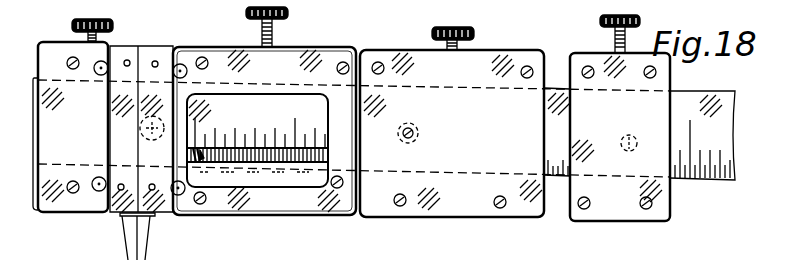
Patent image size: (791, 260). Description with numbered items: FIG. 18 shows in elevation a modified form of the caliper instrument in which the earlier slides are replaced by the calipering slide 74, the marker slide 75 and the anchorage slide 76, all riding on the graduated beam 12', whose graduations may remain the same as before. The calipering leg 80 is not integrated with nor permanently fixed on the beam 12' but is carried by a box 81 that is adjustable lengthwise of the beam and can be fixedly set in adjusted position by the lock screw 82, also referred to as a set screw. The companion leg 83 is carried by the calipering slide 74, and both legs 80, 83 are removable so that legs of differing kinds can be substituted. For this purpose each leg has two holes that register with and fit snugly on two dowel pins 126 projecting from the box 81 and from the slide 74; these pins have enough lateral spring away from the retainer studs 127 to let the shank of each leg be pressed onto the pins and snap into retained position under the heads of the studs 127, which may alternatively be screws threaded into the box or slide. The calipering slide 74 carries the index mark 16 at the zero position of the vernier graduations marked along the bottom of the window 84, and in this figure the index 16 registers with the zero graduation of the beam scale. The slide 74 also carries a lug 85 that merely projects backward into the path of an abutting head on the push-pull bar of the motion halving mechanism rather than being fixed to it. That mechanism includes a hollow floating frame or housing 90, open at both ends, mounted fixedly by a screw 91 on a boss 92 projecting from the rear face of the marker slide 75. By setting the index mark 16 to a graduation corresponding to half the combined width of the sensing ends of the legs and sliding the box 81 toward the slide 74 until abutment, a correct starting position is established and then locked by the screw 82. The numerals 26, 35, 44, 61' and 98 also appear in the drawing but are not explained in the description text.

The beam 12' is at (385, 144).
The index mark 16 is at (203, 162).
The clamping screw 26 is at (289, 13).
The clamping screw 35 is at (476, 32).
The clamping screw 44 is at (620, 26).
The pivot 61' is at (620, 152).
The calipering slide 74 is at (264, 131).
The marker slide 75 is at (452, 133).
The anchorage slide 76 is at (620, 137).
The calipering leg 80 is at (114, 250).
The box 81 is at (73, 127).
The lock screw 82 is at (80, 18).
The companion leg 83 is at (160, 244).
The window 84 is at (326, 116).
The lug 85 is at (152, 140).
The floating frame or housing 90 is at (527, 6).
The screw 91 is at (418, 126).
The boss 92 is at (416, 138).
The scale member 98 is at (571, 0).
The dowel pins 126 is at (155, 61).
The retainer studs 127 is at (96, 74).